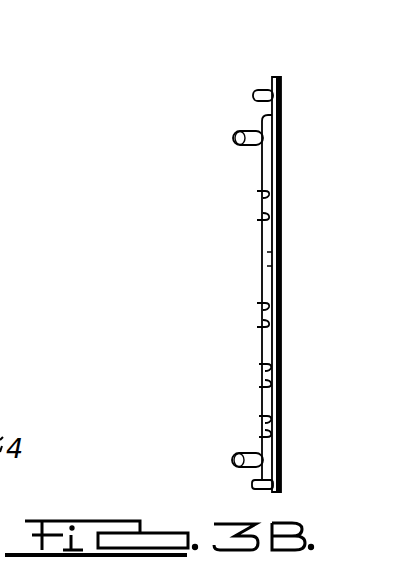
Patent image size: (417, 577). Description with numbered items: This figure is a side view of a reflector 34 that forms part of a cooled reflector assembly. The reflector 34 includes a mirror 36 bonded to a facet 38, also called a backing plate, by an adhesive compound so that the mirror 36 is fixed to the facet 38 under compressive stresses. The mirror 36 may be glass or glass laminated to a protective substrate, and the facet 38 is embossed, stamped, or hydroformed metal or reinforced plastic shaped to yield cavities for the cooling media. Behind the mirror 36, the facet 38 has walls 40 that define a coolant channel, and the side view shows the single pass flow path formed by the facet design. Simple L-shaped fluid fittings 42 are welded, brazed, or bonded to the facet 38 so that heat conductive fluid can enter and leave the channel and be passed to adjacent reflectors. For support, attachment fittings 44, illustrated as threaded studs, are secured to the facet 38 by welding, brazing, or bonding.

The reflector 34 is at (200, 121).
The mirror 36 is at (283, 171).
The facet 38 is at (262, 238).
The walls 40 is at (257, 191).
The fluid fittings 42 is at (233, 139).
The attachment fittings 44 is at (255, 91).